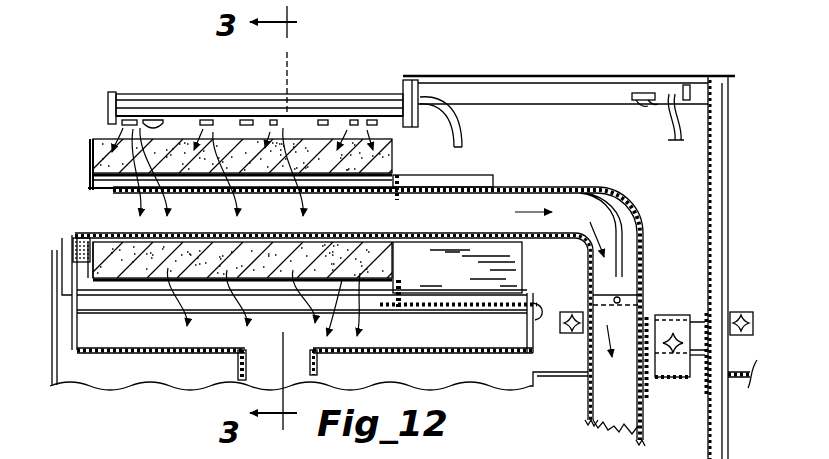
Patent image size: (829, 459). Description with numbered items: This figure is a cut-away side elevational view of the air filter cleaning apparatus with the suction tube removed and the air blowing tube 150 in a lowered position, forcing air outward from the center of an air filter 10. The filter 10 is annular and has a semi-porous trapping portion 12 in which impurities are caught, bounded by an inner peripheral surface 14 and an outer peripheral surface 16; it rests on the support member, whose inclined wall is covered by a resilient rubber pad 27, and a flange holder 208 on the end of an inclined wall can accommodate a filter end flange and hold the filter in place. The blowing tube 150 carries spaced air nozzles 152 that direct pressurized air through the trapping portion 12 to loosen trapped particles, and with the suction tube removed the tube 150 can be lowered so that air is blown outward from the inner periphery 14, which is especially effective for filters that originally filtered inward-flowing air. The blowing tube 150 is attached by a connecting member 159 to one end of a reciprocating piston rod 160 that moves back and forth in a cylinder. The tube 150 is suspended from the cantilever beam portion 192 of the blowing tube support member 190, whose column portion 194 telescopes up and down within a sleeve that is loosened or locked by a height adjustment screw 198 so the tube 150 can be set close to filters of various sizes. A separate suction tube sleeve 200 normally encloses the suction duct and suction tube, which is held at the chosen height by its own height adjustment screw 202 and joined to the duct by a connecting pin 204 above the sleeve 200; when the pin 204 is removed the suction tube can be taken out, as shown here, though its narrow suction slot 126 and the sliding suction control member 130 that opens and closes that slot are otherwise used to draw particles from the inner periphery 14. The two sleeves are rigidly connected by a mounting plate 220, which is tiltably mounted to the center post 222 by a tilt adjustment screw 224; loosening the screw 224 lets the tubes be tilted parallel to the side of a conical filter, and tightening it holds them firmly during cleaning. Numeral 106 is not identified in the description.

The air filter 10 is at (98, 140).
The trapping portion 12 is at (93, 155).
The inner peripheral surface 14 is at (385, 232).
The outer peripheral surface 16 is at (166, 282).
The rubber pad 27 is at (490, 262).
The support post 106 is at (258, 376).
The suction slot 126 is at (367, 182).
The sliding suction control member 130 is at (613, 212).
The air blowing tube 150 is at (245, 113).
The air nozzles 152 is at (217, 80).
The connecting member 159 is at (113, 92).
The piston rod 160 is at (140, 93).
The blowing tube support member 190 is at (730, 77).
The cantilever beam portion 192 is at (621, 45).
The column portion 194 is at (727, 148).
The height adjustment screw 198 is at (768, 297).
The suction tube sleeve 200 is at (606, 373).
The height adjustment screw 202 is at (575, 312).
The connecting pin 204 is at (618, 297).
The flange holder 208 is at (53, 250).
The mounting plate 220 is at (697, 372).
The center post 222 is at (672, 362).
The tilt adjustment screw 224 is at (674, 334).